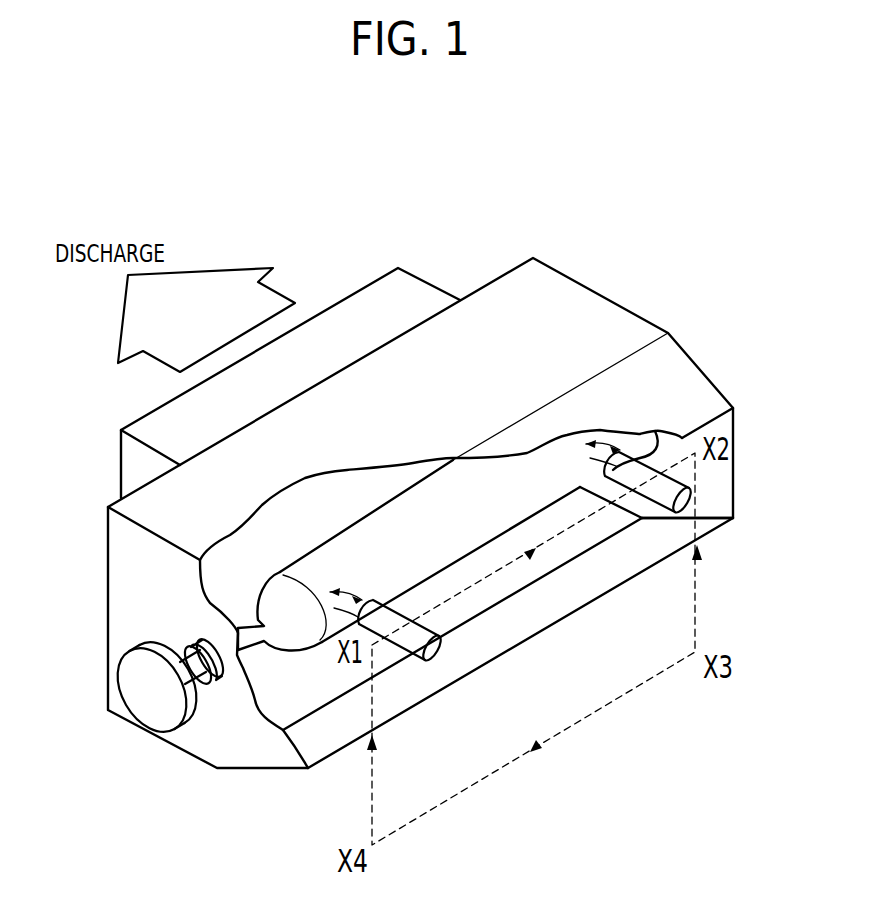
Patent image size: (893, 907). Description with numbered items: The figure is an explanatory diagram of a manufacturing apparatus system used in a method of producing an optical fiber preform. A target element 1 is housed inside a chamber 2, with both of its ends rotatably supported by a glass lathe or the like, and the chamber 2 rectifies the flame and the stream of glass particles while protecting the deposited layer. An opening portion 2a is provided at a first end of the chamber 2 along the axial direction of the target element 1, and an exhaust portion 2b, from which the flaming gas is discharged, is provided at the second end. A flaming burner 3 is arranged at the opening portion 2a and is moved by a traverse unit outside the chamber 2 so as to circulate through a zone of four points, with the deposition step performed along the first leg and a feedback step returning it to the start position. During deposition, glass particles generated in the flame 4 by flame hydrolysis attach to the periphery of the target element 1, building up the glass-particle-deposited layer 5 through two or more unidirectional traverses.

The target element 1 is at (213, 667).
The chamber 2 is at (416, 492).
The opening portion 2a is at (708, 523).
The exhaust portion 2b is at (143, 417).
The flaming burner 3 is at (687, 502).
The flame 4 is at (343, 588).
The glass-particle-deposited layer 5 is at (407, 498).